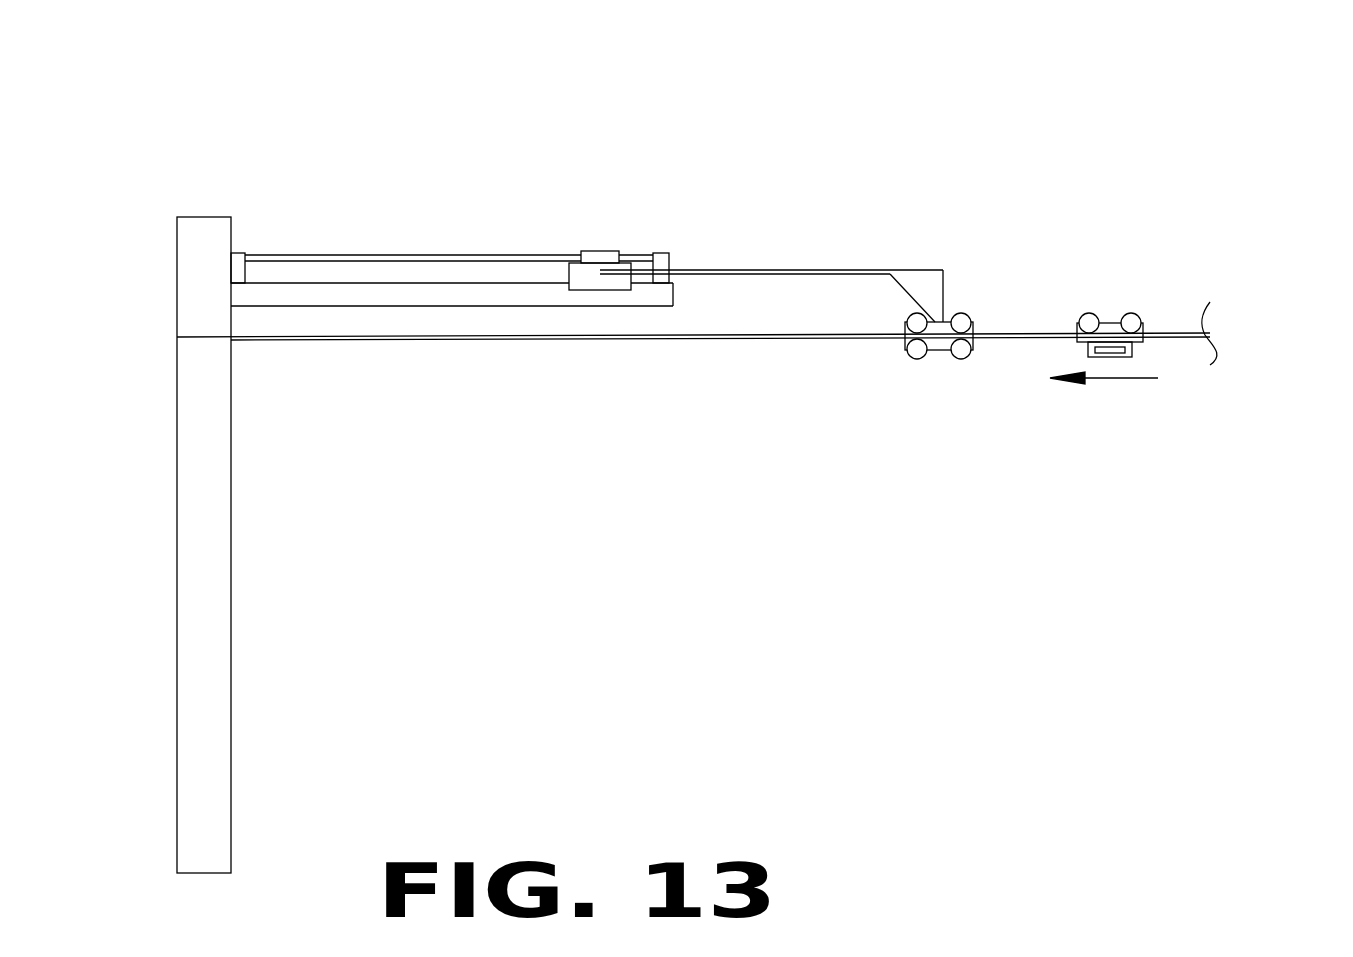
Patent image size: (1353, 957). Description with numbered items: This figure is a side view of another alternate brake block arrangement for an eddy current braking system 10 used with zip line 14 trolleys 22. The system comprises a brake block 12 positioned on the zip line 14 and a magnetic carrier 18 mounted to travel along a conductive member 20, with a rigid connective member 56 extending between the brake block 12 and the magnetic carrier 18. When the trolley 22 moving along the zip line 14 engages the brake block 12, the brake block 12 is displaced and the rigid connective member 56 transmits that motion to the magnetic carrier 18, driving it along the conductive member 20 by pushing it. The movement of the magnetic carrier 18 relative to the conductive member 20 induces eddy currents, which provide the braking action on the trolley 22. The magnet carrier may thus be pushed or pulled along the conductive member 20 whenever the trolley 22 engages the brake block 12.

The eddy current braking system 10 is at (1279, 116).
The brake block 12 is at (922, 345).
The zip line 14 is at (1180, 339).
The magnetic carrier 18 is at (602, 257).
The conductive member 20 is at (348, 270).
The trolley 22 is at (1137, 307).
The rigid connective member 56 is at (792, 270).